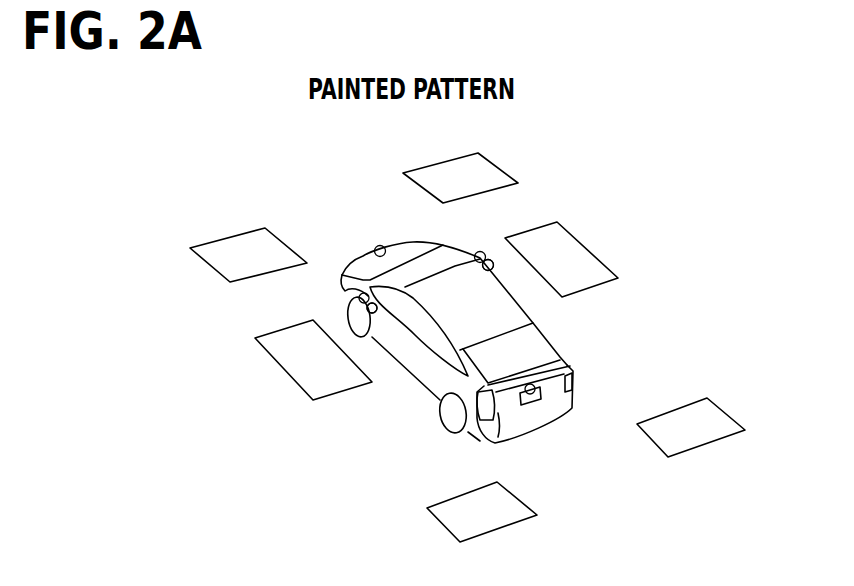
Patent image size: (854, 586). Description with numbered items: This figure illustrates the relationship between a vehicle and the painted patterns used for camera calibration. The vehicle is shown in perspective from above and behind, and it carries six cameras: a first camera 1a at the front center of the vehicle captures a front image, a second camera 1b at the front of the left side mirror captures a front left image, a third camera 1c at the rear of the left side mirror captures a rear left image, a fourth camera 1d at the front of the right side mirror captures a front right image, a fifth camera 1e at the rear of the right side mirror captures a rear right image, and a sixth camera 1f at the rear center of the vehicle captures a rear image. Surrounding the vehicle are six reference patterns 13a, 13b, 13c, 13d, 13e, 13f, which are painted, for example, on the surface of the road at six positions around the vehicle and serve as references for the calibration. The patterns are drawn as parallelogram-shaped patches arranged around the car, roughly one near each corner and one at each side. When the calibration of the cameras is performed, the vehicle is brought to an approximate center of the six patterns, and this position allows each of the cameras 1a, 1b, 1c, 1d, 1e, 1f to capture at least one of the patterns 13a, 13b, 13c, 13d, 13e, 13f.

The first camera 1a is at (379, 249).
The second camera 1b is at (360, 298).
The third camera 1c is at (375, 313).
The fourth camera 1d is at (480, 253).
The fifth camera 1e is at (493, 268).
The sixth camera 1f is at (573, 375).
The reference pattern 13a is at (245, 247).
The reference pattern 13b is at (483, 170).
The reference pattern 13c is at (290, 365).
The reference pattern 13d is at (578, 252).
The reference pattern 13e is at (452, 512).
The reference pattern 13f is at (697, 438).